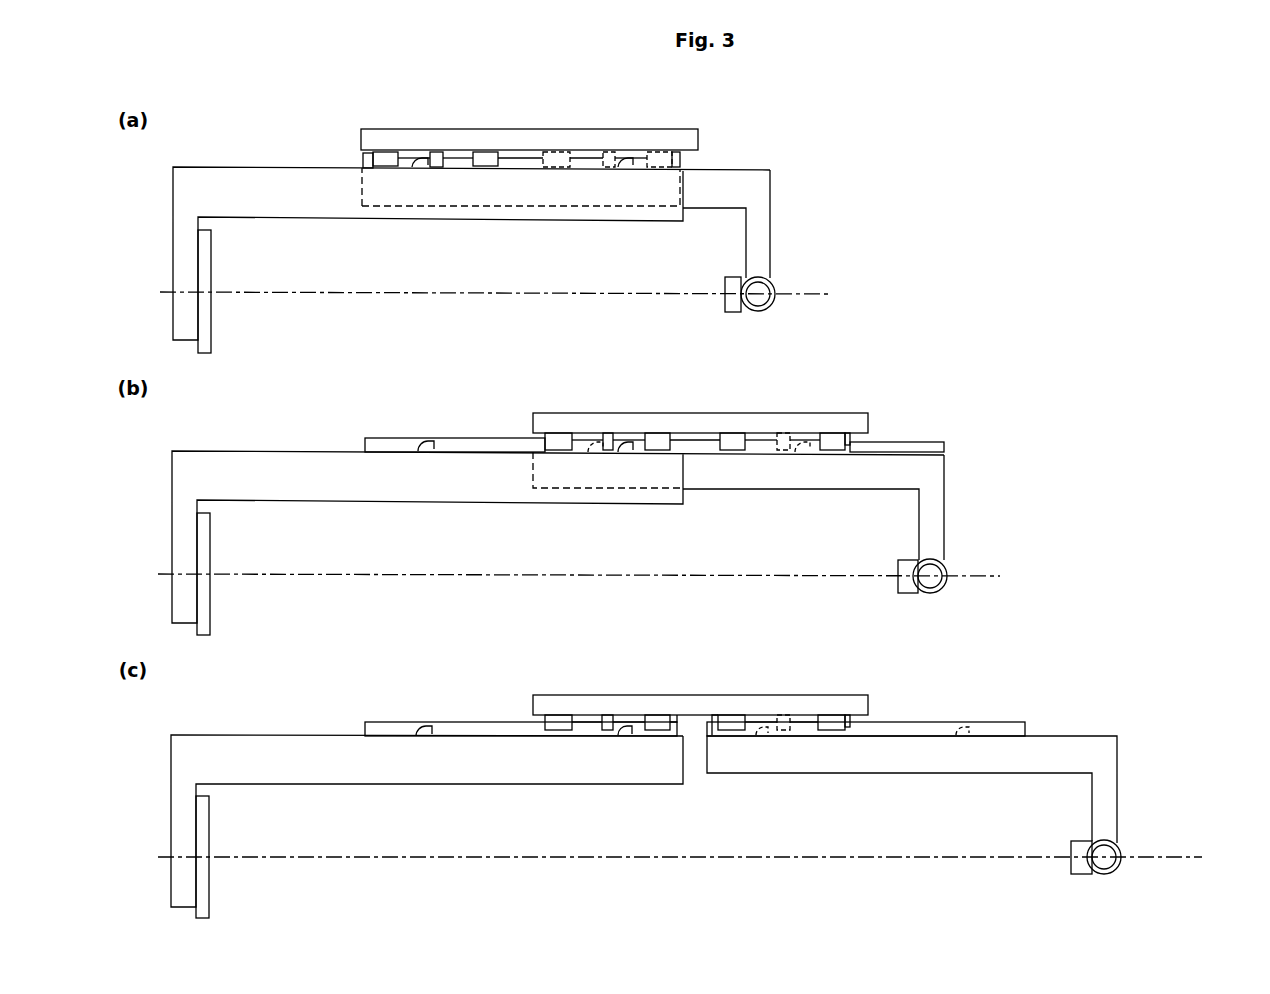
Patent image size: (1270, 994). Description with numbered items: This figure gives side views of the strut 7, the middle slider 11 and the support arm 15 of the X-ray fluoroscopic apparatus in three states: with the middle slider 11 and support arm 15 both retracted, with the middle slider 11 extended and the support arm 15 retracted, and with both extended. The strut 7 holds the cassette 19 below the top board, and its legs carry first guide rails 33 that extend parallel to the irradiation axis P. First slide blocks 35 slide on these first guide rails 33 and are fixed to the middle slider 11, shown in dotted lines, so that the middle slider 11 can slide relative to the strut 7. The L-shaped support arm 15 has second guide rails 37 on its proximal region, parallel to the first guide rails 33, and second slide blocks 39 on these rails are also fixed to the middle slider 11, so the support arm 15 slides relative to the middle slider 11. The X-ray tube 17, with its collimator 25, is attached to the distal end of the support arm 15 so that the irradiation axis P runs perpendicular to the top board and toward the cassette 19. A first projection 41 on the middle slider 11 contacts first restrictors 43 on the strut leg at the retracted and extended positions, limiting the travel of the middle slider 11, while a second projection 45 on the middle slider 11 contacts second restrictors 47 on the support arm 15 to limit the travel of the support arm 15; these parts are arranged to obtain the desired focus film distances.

The strut 7 is at (215, 167).
The middle slider 11 is at (700, 141).
The support arm 15 is at (770, 168).
The X-ray tube 17 is at (774, 289).
The cassette 19 is at (211, 274).
The collimator 25 is at (724, 277).
The first guide rail 33 is at (363, 160).
The first slide block 35 is at (403, 152).
The second guide rail 37 is at (856, 454).
The second slide block 39 is at (545, 150).
The first projection 41 is at (437, 152).
The first restrictor 43 is at (414, 166).
The second projection 45 is at (605, 150).
The second restrictor 47 is at (590, 450).
The irradiation axis P is at (818, 293).